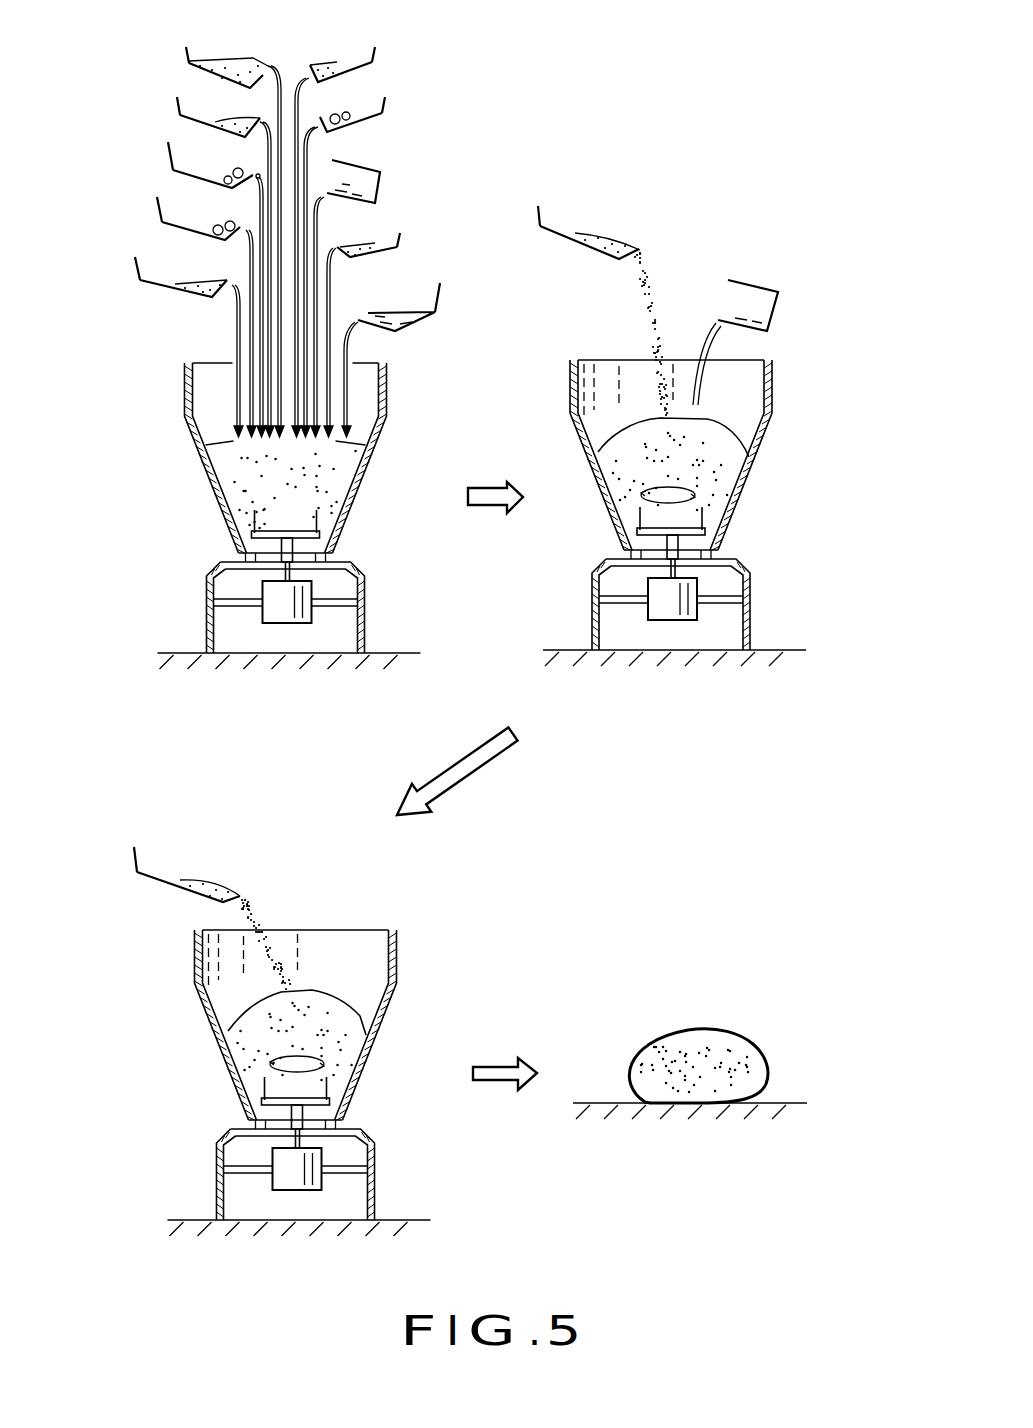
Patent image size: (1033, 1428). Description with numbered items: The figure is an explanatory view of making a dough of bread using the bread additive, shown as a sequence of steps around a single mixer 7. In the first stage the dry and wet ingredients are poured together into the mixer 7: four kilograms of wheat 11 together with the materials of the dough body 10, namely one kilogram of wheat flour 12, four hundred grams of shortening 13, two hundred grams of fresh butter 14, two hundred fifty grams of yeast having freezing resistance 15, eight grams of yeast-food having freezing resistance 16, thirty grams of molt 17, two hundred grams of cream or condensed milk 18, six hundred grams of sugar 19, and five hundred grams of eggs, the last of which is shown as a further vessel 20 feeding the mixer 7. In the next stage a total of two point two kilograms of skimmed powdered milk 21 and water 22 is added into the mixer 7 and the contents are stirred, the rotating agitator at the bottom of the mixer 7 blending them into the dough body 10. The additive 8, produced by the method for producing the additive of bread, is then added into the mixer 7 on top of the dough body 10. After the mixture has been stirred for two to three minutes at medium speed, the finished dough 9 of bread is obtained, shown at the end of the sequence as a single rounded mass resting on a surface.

The mixer 7 is at (367, 480).
The additive 8 is at (233, 887).
The dough 9 is at (725, 1038).
The dough body 10 is at (734, 435).
The wheat 11 is at (237, 60).
The wheat flour 12 is at (223, 118).
The shortening 13 is at (237, 175).
The fresh butter 14 is at (227, 227).
The yeast having freezing resistance 15 is at (200, 280).
The yeast-food having freezing resistance 16 is at (337, 63).
The molt 17 is at (342, 115).
The cream or condensed milk 18 is at (360, 195).
The sugar 19 is at (362, 240).
The liquid additive 20 is at (393, 312).
The skimmed powdered milk 21 is at (626, 240).
The water 22 is at (720, 322).